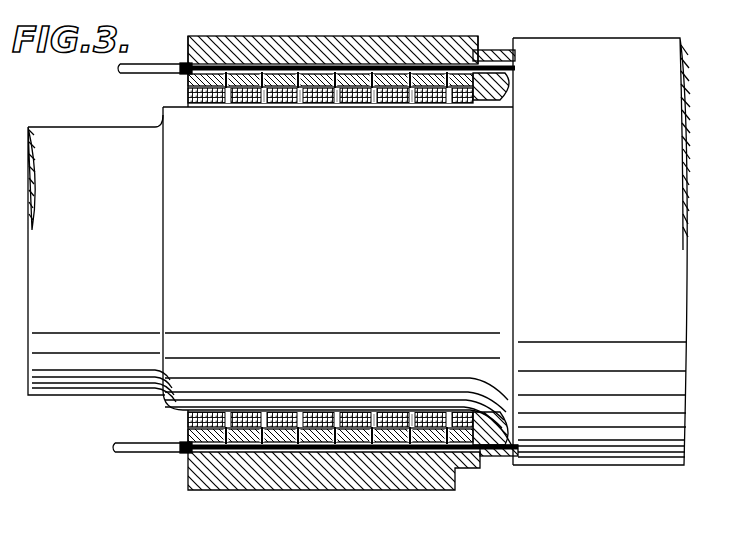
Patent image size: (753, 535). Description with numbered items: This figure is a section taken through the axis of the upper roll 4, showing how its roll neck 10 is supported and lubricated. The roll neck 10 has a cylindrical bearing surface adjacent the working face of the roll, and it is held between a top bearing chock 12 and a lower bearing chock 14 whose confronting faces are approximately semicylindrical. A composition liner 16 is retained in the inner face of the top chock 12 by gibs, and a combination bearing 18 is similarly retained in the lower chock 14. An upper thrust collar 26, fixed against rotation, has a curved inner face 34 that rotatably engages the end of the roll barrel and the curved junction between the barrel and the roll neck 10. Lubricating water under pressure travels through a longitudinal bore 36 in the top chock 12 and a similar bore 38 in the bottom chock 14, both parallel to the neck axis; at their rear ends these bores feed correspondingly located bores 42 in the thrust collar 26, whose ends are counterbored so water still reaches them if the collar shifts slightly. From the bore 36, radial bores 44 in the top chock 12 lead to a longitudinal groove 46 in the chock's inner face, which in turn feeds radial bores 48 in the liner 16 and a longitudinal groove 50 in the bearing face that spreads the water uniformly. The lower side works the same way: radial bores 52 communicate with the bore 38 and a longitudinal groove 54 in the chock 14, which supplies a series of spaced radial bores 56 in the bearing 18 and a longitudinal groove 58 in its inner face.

The upper roll 4 is at (672, 243).
The roll neck 10 is at (366, 256).
The top bearing chock 12 is at (203, 50).
The lower bearing chock 14 is at (190, 480).
The composition liner 16 is at (195, 103).
The combination bearing 18 is at (190, 416).
The upper thrust collar 26 is at (497, 52).
The curved inner face 34 is at (484, 102).
The longitudinal bore 36 is at (240, 82).
The longitudinal bore 38 is at (240, 443).
The bores in thrust collar 42 is at (515, 68).
The radial bores 44 is at (335, 76).
The longitudinal groove 46 is at (400, 78).
The radial bores 48 is at (337, 103).
The longitudinal groove 50 is at (386, 103).
The radial bores 52 is at (295, 428).
The longitudinal groove 54 is at (330, 444).
The radial bores 56 is at (336, 412).
The longitudinal groove 58 is at (388, 412).